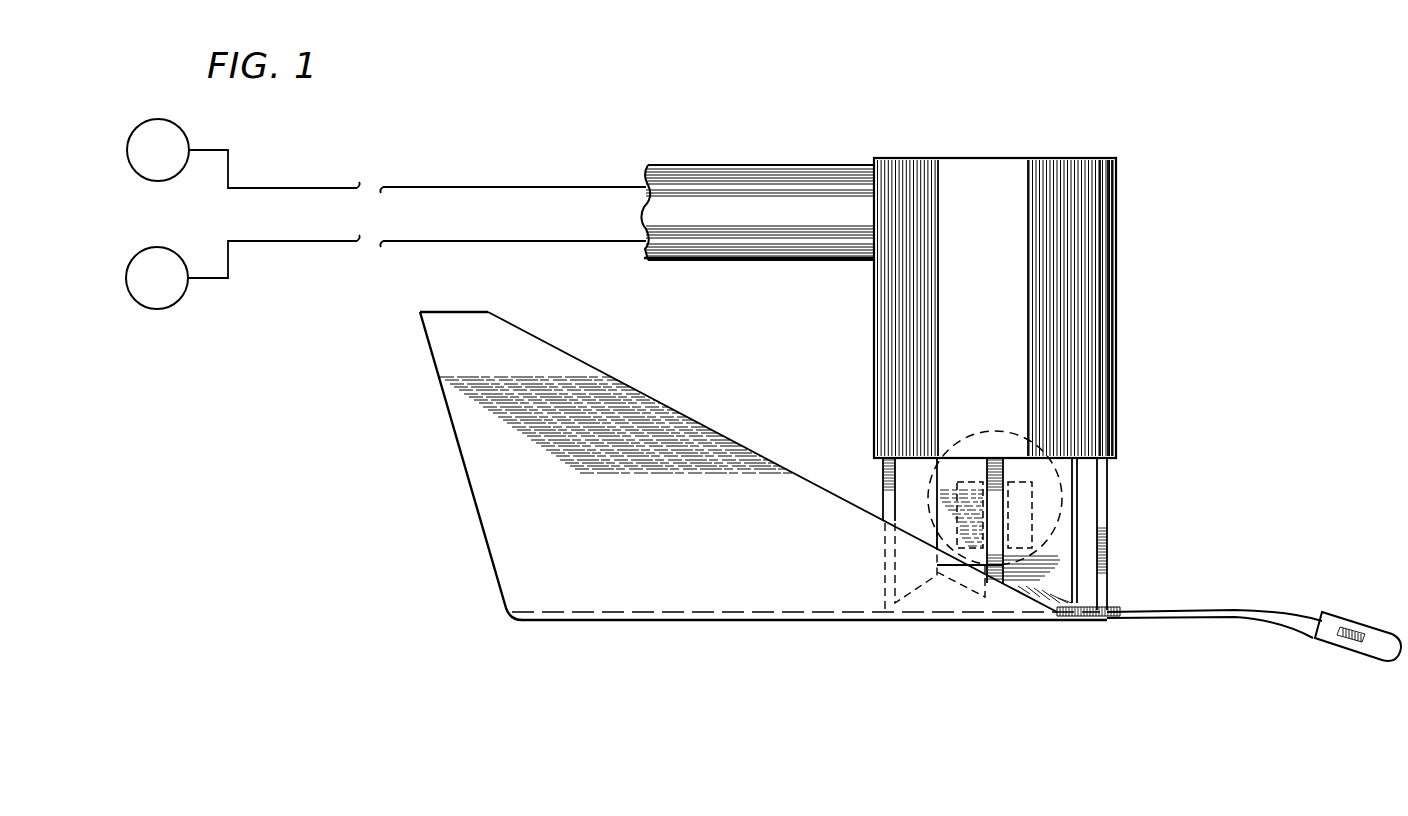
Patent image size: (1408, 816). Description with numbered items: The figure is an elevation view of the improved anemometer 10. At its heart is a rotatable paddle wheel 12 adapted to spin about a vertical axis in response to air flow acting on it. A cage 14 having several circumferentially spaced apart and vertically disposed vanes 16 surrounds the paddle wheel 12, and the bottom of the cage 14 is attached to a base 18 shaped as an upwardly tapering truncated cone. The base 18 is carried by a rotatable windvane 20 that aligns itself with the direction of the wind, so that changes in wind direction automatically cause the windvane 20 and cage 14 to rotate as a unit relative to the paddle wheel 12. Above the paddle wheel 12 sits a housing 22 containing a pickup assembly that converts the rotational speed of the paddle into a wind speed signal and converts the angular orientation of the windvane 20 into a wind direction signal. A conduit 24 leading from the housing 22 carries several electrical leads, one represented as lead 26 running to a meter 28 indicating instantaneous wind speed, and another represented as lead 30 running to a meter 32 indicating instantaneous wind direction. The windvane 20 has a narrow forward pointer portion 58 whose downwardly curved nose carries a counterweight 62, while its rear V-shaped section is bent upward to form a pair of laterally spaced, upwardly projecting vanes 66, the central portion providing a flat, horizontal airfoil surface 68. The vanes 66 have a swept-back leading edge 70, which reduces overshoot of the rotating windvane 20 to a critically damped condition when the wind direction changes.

The anemometer 10 is at (1137, 253).
The paddle wheel 12 is at (1040, 475).
The cage 14 is at (1108, 520).
The vanes 16 is at (883, 485).
The base 18 is at (1088, 623).
The windvane 20 is at (847, 620).
The housing 22 is at (885, 319).
The conduit 24 is at (728, 176).
The electrical lead 26 is at (300, 188).
The meter 28 is at (188, 137).
The electrical lead 30 is at (320, 243).
The meter 32 is at (176, 254).
The arm 58 is at (1145, 612).
The counterweight 62 is at (1343, 640).
The vanes 66 is at (586, 380).
The airfoil surface 68 is at (773, 615).
The swept-back leading edge 70 is at (705, 426).